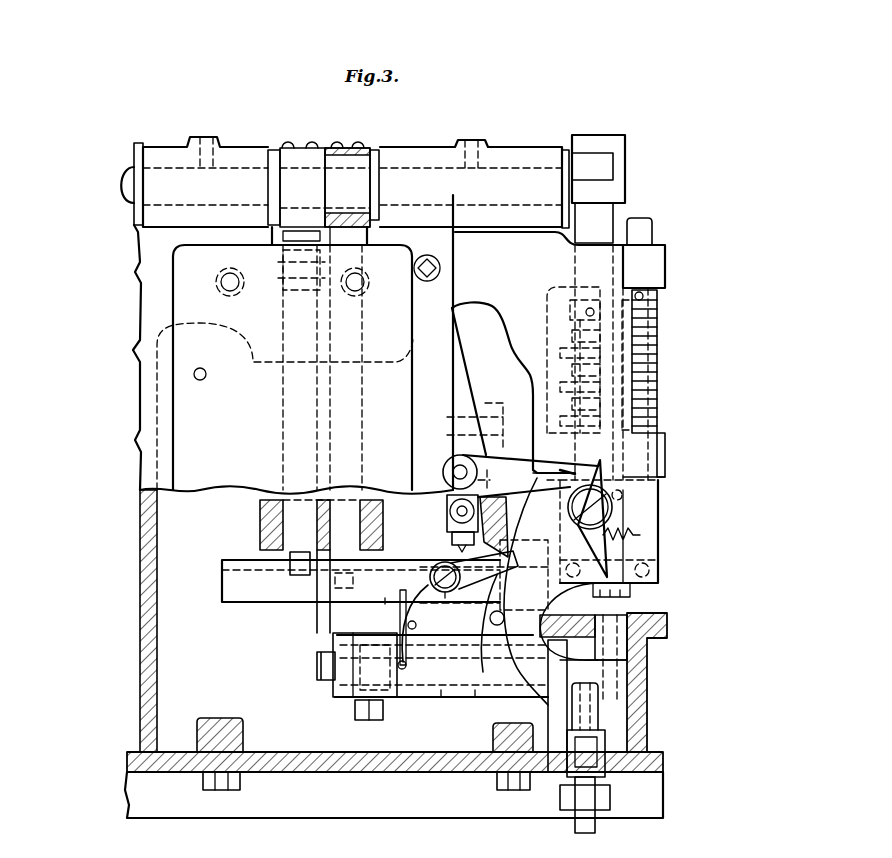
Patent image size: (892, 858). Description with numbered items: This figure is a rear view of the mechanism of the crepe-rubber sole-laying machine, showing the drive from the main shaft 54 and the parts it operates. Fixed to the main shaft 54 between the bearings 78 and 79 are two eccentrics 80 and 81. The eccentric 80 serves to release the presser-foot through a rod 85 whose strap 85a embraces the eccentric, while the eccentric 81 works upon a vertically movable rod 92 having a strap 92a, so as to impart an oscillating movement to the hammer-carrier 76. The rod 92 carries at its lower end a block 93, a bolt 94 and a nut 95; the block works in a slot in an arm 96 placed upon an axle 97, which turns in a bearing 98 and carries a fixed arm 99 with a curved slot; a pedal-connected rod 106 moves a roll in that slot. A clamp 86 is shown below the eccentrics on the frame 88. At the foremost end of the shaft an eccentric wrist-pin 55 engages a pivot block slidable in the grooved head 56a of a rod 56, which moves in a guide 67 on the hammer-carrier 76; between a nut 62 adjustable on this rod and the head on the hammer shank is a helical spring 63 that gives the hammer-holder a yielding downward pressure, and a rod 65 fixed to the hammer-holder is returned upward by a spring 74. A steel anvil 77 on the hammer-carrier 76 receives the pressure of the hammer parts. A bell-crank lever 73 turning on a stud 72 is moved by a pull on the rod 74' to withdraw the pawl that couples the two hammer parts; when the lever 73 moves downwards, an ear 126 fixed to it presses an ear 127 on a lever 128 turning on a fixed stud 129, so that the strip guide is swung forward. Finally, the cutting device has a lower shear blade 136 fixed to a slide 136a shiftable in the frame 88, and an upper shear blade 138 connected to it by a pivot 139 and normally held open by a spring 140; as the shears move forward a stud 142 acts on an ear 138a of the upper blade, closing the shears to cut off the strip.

The main shaft 54 is at (118, 182).
The eccentric wrist-pin 55 is at (598, 150).
The rod 56 is at (594, 341).
The grooved head 56a is at (620, 193).
The nut 62 is at (565, 310).
The helical spring 63 is at (572, 355).
The rod 65 is at (657, 380).
The guide 67 is at (660, 252).
The stud 72 is at (620, 505).
The bell-crank lever 73 is at (522, 506).
The spring 74 is at (660, 406).
The pull-rod 74' is at (361, 567).
The hammer-carrier 76 is at (510, 332).
The steel anvil 77 is at (628, 618).
The bearing 78 is at (410, 152).
The bearing 79 is at (250, 150).
The eccentric 80 is at (296, 187).
The eccentric 81 is at (352, 187).
The rod 85 is at (283, 400).
The strap 85a is at (300, 146).
The clamp 86 is at (272, 238).
The frame 88 is at (142, 327).
The rod 92 is at (362, 412).
The strap 92a is at (360, 146).
The block 93 is at (380, 703).
The bolt 94 is at (404, 680).
The nut 95 is at (322, 683).
The arm 96 is at (352, 712).
The axle 97 is at (475, 697).
The bearing 98 is at (441, 697).
The arm 99 is at (592, 716).
The rod 106 is at (598, 830).
The ear 126 is at (607, 470).
The ear 127 is at (567, 472).
The lever 128 is at (517, 462).
The stud 129 is at (457, 468).
The lower shear blade 136 is at (480, 594).
The slide 136a is at (385, 600).
The upper shear blade 138 is at (513, 576).
The ear 138a is at (428, 590).
The pivot 139 is at (445, 598).
The spring 140 is at (408, 655).
The stud 142 is at (474, 688).